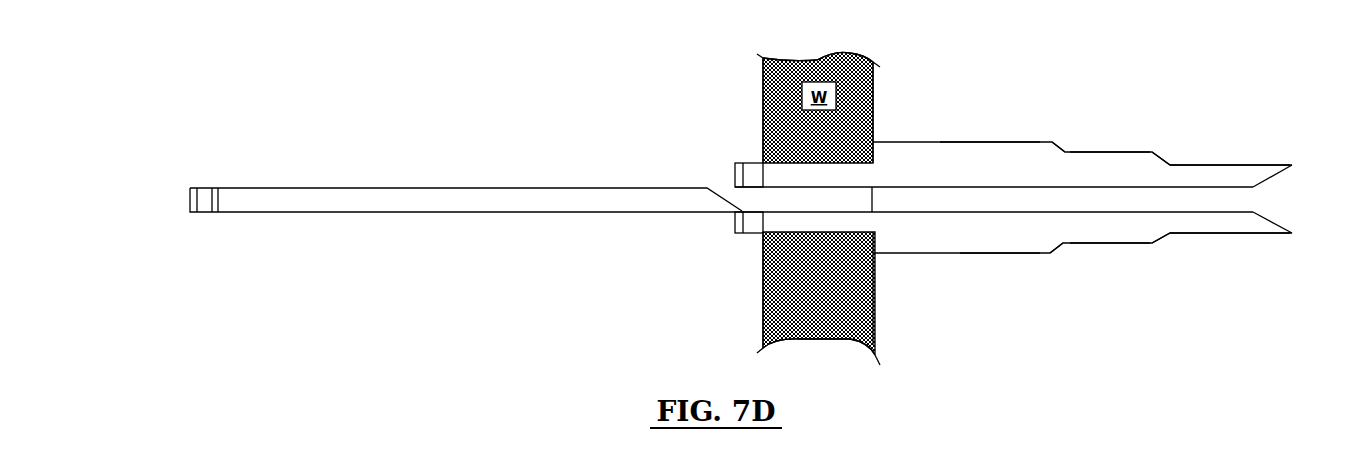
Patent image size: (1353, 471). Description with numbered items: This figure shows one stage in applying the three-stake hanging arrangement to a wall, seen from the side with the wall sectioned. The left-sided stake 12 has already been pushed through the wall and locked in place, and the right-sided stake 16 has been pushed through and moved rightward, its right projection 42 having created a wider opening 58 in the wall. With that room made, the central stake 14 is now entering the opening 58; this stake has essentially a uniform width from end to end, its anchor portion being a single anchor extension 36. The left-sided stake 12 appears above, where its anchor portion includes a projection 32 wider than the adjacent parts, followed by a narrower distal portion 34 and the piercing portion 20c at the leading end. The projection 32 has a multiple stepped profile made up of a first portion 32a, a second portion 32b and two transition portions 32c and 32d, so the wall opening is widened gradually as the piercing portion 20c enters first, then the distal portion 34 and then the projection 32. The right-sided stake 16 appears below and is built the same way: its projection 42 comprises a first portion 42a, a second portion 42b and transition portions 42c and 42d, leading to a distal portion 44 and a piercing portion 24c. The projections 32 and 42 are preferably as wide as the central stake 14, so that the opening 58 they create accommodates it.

The left-sided stake 12 is at (755, 160).
The central stake 14 is at (188, 197).
The right-sided stake 16 is at (735, 218).
The piercing portion 20c is at (1282, 163).
The piercing portion 24c is at (1277, 234).
The projection 32 is at (928, 140).
The first portion 32a is at (985, 140).
The second portion 32b is at (1117, 149).
The transition portion 32c is at (1060, 143).
The transition portion 32d is at (1160, 151).
The distal portion 34 is at (1208, 173).
The anchor extension 36 is at (392, 200).
The projection 42 is at (948, 255).
The first portion 42a is at (978, 255).
The second portion 42b is at (1100, 245).
The transition portion 42c is at (1063, 248).
The transition portion 42d is at (1160, 238).
The distal portion 44 is at (1207, 224).
The opening 58 is at (788, 200).